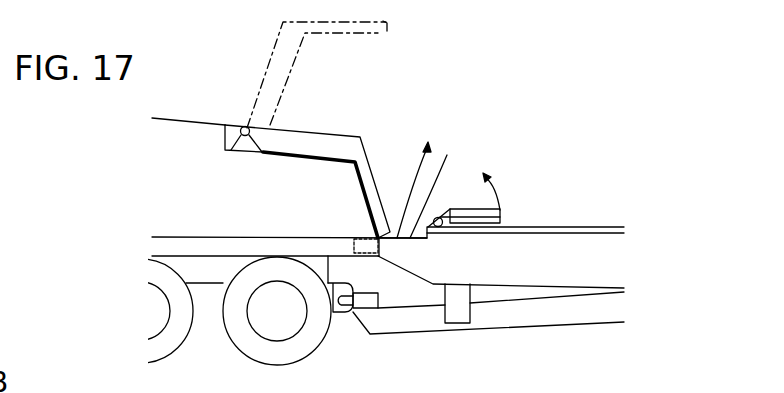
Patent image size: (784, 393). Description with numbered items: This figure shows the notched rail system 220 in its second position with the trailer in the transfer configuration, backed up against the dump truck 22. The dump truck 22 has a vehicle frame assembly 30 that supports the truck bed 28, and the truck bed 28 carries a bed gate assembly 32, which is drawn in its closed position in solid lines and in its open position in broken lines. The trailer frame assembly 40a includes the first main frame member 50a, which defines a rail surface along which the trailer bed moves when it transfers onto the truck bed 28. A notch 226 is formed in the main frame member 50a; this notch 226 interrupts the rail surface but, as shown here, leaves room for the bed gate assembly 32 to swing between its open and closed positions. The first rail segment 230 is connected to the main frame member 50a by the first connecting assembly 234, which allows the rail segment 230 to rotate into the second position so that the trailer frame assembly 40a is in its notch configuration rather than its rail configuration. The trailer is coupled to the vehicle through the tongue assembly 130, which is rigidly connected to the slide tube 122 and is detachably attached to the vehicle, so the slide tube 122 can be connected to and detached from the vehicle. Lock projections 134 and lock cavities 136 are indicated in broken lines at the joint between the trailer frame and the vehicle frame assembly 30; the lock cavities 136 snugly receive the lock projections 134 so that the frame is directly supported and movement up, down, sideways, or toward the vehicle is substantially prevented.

The dump truck 22 is at (179, 108).
The truck bed 28 is at (190, 137).
The bed gate assembly 32 is at (292, 62).
The lock projections 134 is at (365, 238).
The lock cavities 136 is at (355, 239).
The notch 226 is at (447, 155).
The first connecting assembly 234 is at (444, 201).
The first rail segment 230 is at (480, 223).
The trailer frame assembly 40a is at (533, 214).
The notched rail system 220 is at (551, 214).
The first main frame member 50a is at (572, 254).
The vehicle frame assembly 30 is at (207, 292).
The tongue assembly 130 is at (342, 324).
The slide tube 122 is at (539, 315).